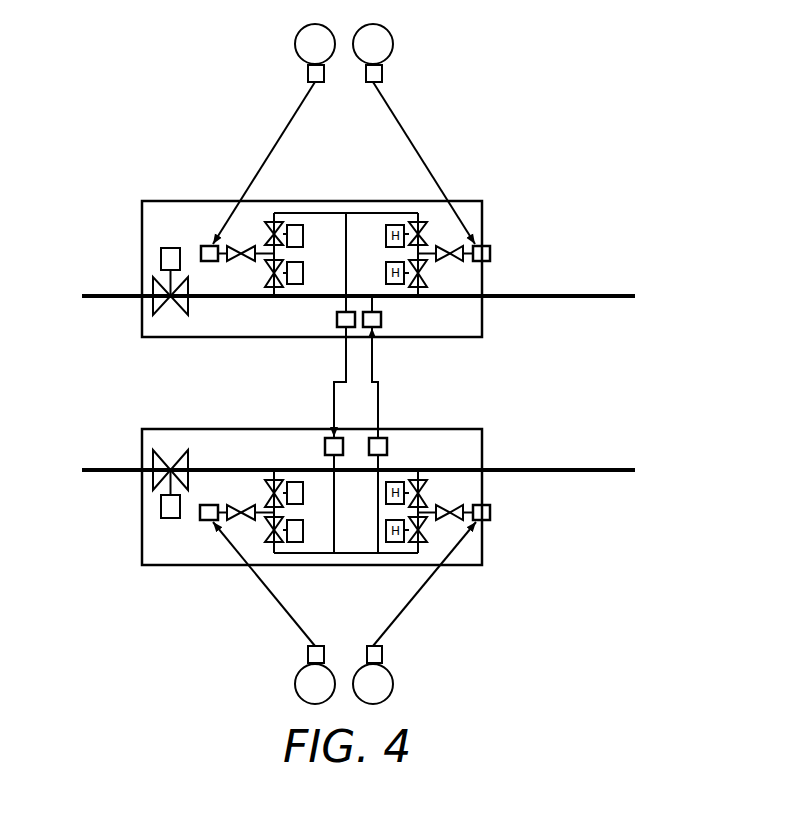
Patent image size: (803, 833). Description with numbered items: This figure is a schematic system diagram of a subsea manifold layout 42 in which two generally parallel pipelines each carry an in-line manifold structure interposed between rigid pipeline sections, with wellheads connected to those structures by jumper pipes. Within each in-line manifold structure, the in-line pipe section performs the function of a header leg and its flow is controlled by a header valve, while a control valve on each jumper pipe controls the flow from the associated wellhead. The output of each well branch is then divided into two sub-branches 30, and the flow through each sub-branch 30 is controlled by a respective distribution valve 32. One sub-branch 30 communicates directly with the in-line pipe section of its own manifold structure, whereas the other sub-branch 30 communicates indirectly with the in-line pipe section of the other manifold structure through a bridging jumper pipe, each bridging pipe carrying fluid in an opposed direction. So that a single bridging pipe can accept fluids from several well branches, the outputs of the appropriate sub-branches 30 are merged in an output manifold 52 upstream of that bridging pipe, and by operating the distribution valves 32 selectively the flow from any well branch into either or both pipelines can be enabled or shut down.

The sub-branch 30 is at (290, 222).
The distribution valve 32 is at (303, 493).
The subsea manifold layout 42 is at (150, 127).
The output manifold 52 is at (352, 214).